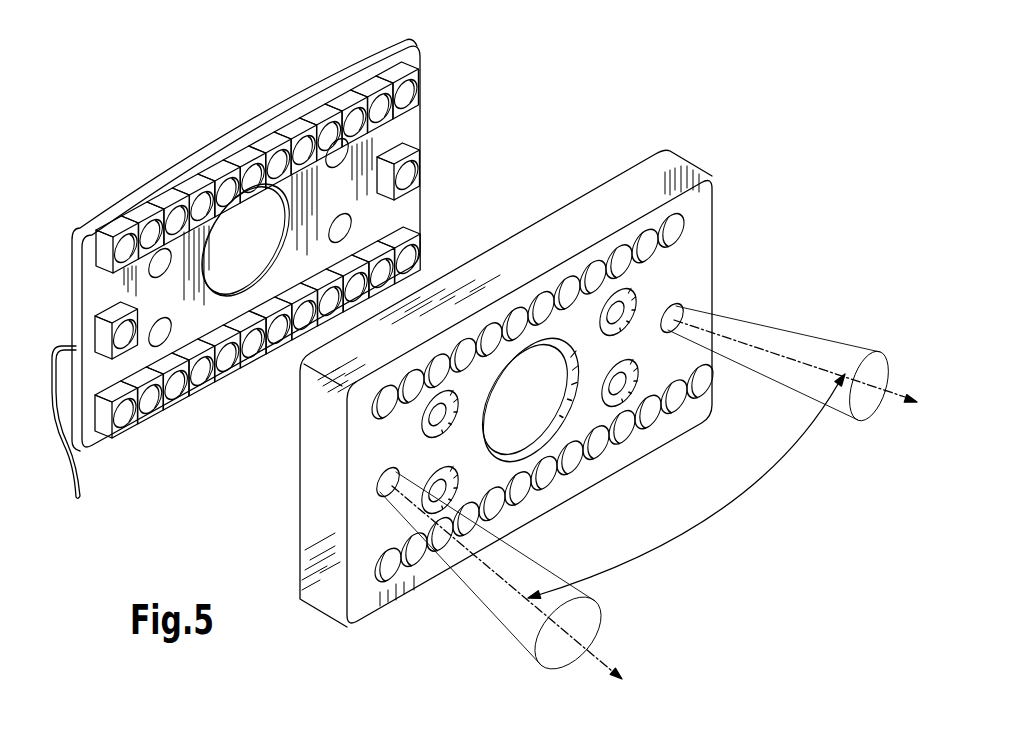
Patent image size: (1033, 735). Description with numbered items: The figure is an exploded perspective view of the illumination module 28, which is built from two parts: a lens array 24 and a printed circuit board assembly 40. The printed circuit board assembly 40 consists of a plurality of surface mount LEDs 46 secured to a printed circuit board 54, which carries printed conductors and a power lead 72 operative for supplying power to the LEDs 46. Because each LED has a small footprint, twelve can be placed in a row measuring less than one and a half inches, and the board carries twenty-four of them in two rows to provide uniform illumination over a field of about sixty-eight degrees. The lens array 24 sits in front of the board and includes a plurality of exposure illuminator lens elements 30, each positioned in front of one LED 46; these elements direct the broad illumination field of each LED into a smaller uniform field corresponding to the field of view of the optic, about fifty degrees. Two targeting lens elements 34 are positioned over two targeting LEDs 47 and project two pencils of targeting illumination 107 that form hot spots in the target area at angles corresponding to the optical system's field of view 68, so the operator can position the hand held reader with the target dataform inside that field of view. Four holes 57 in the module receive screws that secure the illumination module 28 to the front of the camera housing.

The lens array 24 is at (678, 169).
The illumination module 28 is at (612, 74).
The exposure illuminator lens elements 30 is at (672, 231).
The targeting lens elements 34 is at (684, 306).
The printed circuit board assembly 40 is at (405, 37).
The surface mount LEDs 46 is at (332, 125).
The targeting LEDs 47 is at (406, 174).
The printed circuit board 54 is at (410, 117).
The holes 57 is at (422, 420).
The field of view 68 is at (712, 518).
The power lead 72 is at (49, 322).
The pencils of targeting illumination 107 is at (873, 388).